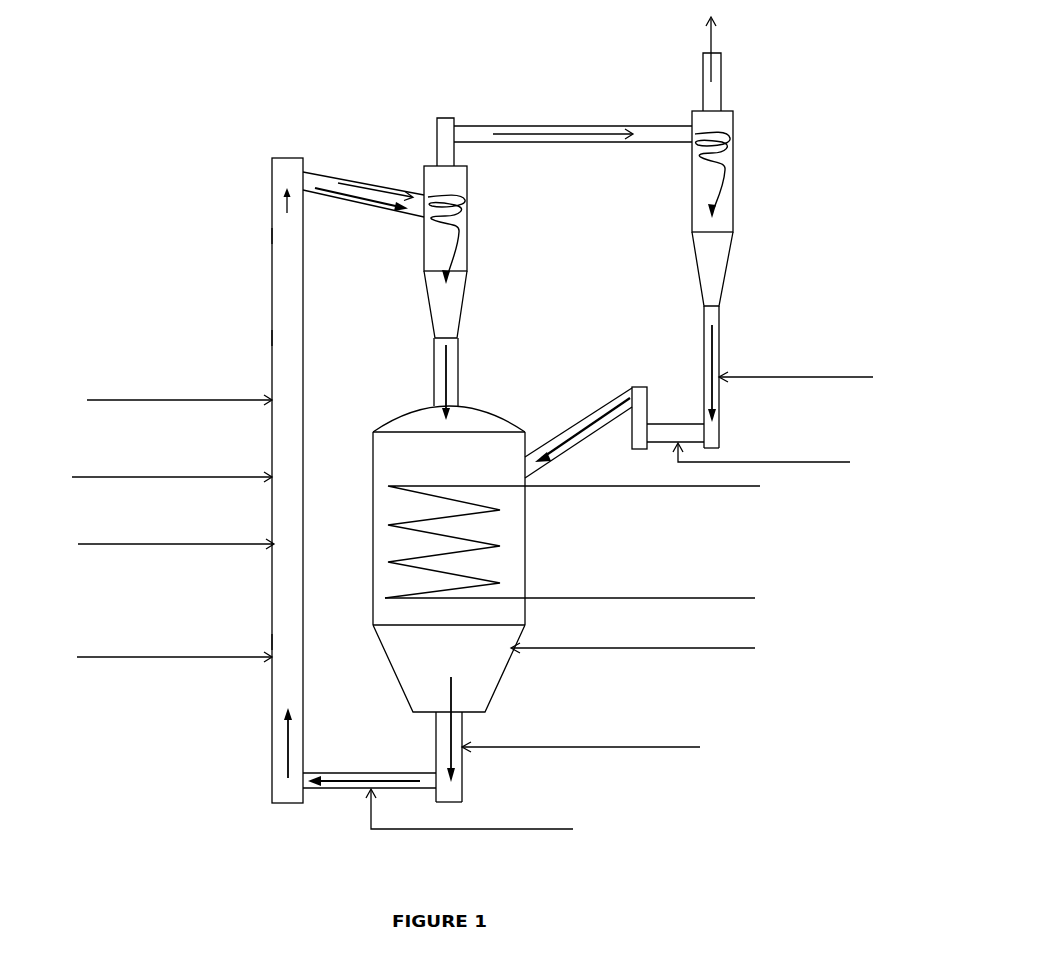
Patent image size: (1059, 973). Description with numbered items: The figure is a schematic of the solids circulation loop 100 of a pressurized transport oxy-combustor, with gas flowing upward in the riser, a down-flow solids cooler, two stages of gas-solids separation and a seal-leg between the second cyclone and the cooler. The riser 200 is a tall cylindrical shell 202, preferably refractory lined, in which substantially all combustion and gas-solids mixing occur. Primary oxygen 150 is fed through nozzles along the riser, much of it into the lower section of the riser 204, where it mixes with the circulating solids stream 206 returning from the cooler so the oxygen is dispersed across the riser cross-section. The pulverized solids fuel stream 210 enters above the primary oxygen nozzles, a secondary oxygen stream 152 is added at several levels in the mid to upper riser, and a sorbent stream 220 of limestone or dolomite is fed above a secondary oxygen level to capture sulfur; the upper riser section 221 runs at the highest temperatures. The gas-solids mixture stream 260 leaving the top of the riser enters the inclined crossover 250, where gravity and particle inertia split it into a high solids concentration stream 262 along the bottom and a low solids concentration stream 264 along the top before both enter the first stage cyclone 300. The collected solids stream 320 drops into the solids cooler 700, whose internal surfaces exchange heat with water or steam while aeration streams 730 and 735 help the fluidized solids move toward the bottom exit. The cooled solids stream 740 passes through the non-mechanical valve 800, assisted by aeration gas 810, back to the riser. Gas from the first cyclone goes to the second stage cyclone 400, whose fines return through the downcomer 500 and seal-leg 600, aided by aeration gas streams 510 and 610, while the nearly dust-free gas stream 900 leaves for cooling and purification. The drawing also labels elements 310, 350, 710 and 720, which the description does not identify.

The solids circulation loop 100 is at (800, 102).
The primary oxygen 150 is at (174, 640).
The secondary oxygen stream 152 is at (179, 388).
The riser 200 is at (270, 322).
The cylindrical shell 202 is at (286, 339).
The lower section of the riser 204 is at (284, 643).
The solids stream 206 is at (285, 727).
The solids fuel stream 210 is at (176, 530).
The sorbent stream 220 is at (172, 462).
The upper riser section 221 is at (284, 237).
The inclined crossover 250 is at (318, 172).
The gas-solids mixture stream 260 is at (280, 195).
The high solids concentration stream 262 is at (398, 207).
The low solids concentration stream 264 is at (390, 190).
The first stage cyclone 300 is at (423, 168).
The first cyclone dipleg 310 is at (447, 373).
The solids stream 320 is at (467, 217).
The vapor transfer line 350 is at (477, 124).
The second stage cyclone 400 is at (690, 112).
The downcomer 500 is at (703, 376).
The aeration gas stream 510 is at (796, 369).
The seal-leg 600 is at (637, 385).
The aeration gas stream 610 is at (761, 453).
The solids cooler 700 is at (395, 410).
The stripping steam inlet 710 is at (570, 591).
The stripping section outlet 720 is at (572, 534).
The aeration stream 730 is at (581, 739).
The aeration stream 735 is at (633, 643).
The cooled solids stream 740 is at (455, 757).
The non-mechanical valve 800 is at (410, 773).
The aeration gas 810 is at (469, 812).
The gas stream 900 is at (712, 40).